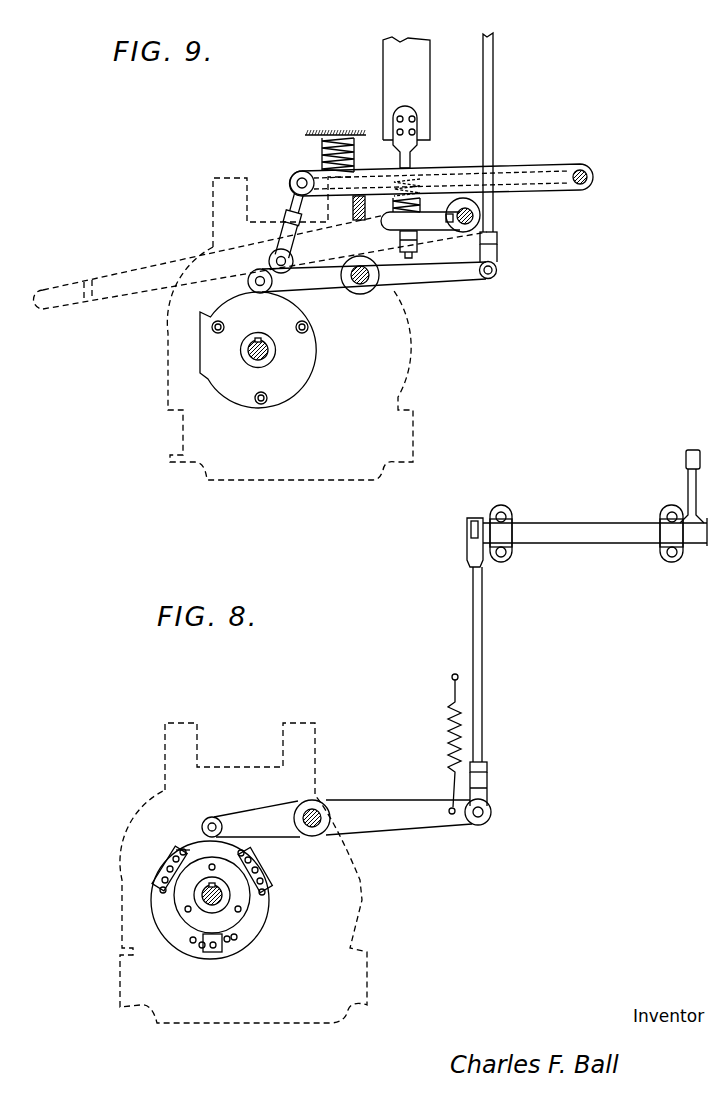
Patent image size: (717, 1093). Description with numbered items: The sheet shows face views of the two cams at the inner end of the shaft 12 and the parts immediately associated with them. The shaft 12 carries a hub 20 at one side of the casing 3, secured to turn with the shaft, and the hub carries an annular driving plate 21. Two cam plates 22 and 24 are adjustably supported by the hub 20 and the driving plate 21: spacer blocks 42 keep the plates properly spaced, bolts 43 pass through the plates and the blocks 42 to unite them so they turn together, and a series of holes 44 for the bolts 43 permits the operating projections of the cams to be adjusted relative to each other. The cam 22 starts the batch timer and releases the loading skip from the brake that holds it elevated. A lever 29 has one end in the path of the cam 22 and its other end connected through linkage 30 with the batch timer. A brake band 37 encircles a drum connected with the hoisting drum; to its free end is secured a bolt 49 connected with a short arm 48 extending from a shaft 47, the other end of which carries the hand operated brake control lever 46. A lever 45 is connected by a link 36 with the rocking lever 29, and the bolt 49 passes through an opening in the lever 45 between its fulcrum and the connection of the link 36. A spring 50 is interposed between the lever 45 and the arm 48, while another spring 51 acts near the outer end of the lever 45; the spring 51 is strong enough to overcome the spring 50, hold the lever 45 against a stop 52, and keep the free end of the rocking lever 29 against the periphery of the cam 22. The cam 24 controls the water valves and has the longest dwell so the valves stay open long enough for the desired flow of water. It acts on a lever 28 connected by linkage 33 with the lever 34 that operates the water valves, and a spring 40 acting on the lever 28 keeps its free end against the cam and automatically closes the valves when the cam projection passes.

In FIG. 9, the casing 3 is at (410, 368).
In FIG. 8, the casing 3 is at (362, 900).
In FIG. 9, the shaft 12 is at (250, 357).
In FIG. 9, the hub 20 is at (242, 348).
In FIG. 8, the hub 20 is at (227, 897).
In FIG. 8, the annular plate 21 is at (178, 898).
In FIG. 9, the cam plate 22 is at (292, 390).
In FIG. 8, the cam plate 24 is at (172, 938).
In FIG. 8, the lever 28 is at (436, 817).
In FIG. 9, the lever 29 is at (480, 284).
In FIG. 9, the linkage 30 is at (488, 100).
In FIG. 8, the linkage 33 is at (478, 620).
In FIG. 8, the lever 34 is at (685, 463).
In FIG. 9, the link 36 is at (278, 235).
In FIG. 9, the brake band 37 is at (397, 82).
In FIG. 8, the spring 40 is at (448, 733).
In FIG. 8, the spacer block 42 is at (183, 853).
In FIG. 9, the bolt 43 is at (305, 327).
In FIG. 8, the bolt 43 is at (163, 870).
In FIG. 8, the series of holes 44 is at (183, 847).
In FIG. 9, the lever 45 is at (525, 180).
In FIG. 9, the hand operated brake control lever 46 is at (130, 272).
In FIG. 9, the shaft 47 is at (483, 215).
In FIG. 9, the short arm 48 is at (420, 253).
In FIG. 9, the bolt 49 is at (405, 165).
In FIG. 9, the spring 50 is at (422, 200).
In FIG. 9, the spring 51 is at (331, 134).
In FIG. 9, the stop 52 is at (356, 212).